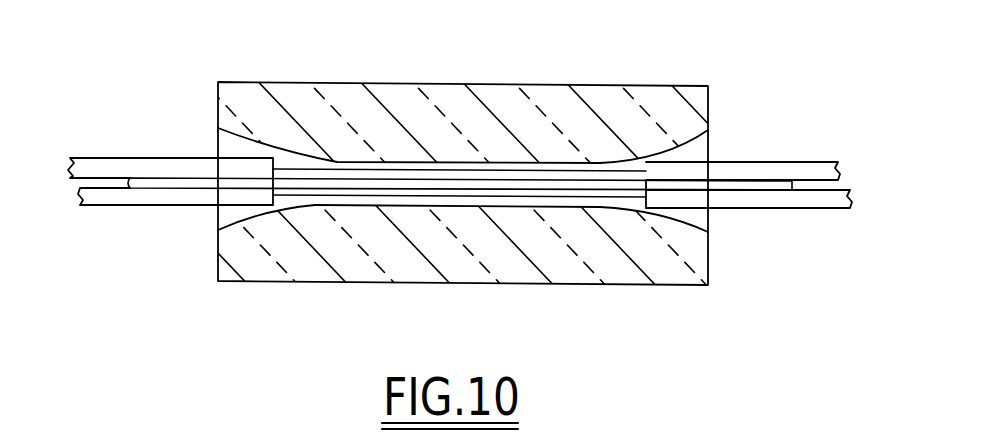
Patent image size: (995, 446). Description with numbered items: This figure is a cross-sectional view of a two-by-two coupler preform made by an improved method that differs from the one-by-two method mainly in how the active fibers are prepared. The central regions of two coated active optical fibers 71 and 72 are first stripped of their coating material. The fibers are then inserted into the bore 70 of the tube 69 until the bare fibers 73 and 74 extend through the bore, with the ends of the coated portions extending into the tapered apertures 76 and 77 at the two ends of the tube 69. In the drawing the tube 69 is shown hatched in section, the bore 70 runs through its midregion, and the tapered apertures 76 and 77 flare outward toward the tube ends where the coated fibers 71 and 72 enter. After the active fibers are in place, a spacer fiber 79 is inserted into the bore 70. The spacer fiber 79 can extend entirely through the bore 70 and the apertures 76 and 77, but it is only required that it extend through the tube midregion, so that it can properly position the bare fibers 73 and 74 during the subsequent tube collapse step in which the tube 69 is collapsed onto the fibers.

The tube 69 is at (463, 82).
The bore 70 is at (393, 168).
The coated active optical fiber 71 is at (778, 159).
The coated active optical fiber 72 is at (795, 210).
The bare fiber 73 is at (540, 174).
The bare fiber 74 is at (527, 196).
The tapered aperture 76 is at (697, 136).
The tapered aperture 77 is at (216, 209).
The spacer fiber 79 is at (176, 179).